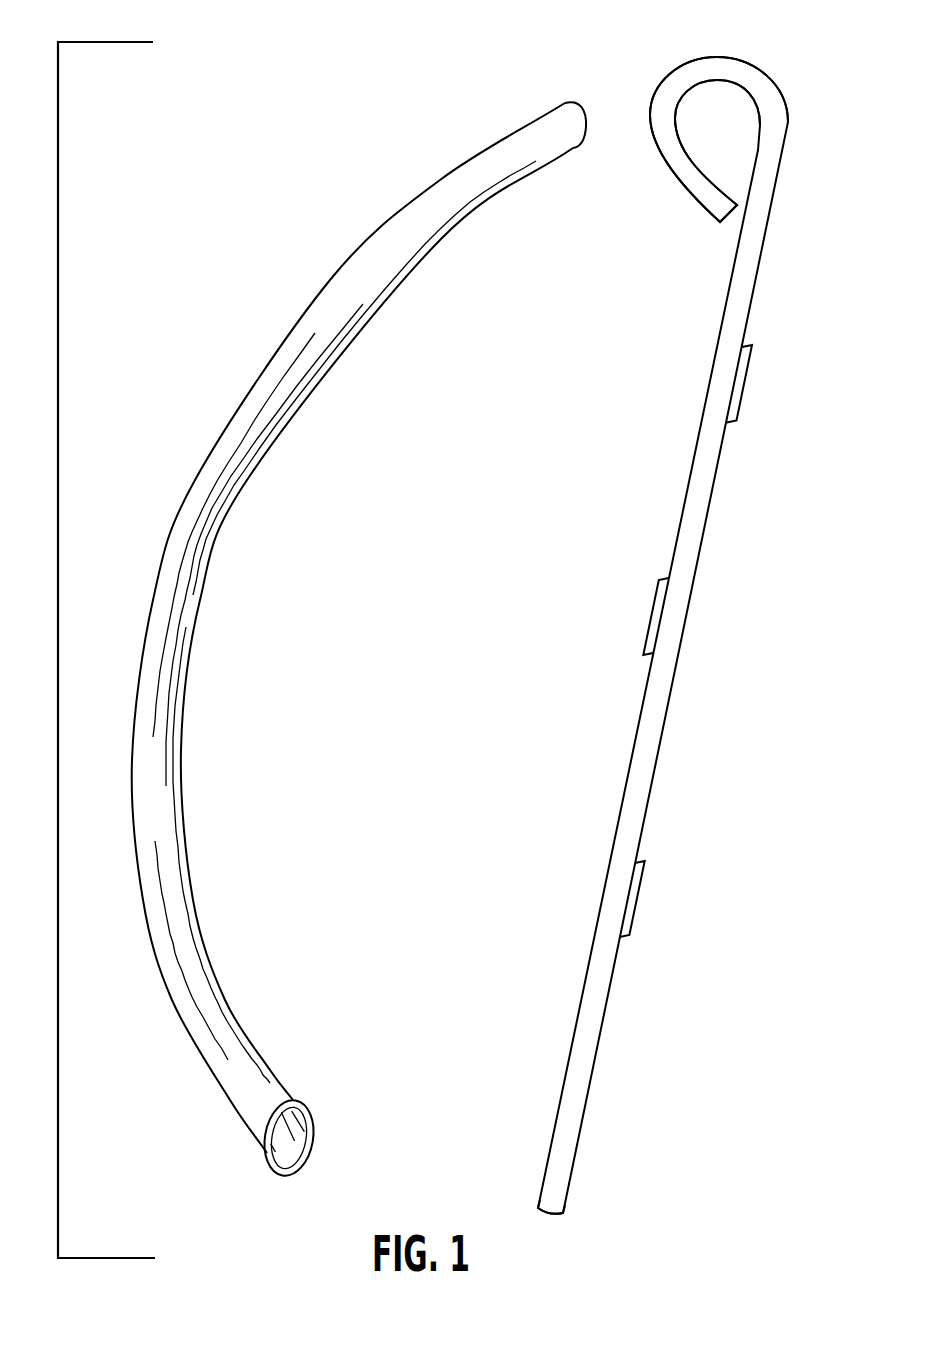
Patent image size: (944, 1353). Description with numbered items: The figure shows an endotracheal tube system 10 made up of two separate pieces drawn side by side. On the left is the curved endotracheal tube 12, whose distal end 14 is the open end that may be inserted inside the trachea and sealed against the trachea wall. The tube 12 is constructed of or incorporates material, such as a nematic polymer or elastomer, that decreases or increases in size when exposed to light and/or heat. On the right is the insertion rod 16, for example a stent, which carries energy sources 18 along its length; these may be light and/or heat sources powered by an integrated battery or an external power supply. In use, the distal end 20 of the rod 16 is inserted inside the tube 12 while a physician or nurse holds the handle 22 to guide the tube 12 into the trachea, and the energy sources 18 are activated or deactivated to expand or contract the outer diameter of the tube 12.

The endotracheal tube system 10 is at (58, 662).
The endotracheal tube 12 is at (252, 350).
The distal end 14 is at (287, 1178).
The insertion rod 16 is at (640, 503).
The energy sources 18 is at (750, 377).
The distal end 20 is at (550, 1215).
The handle 22 is at (700, 57).